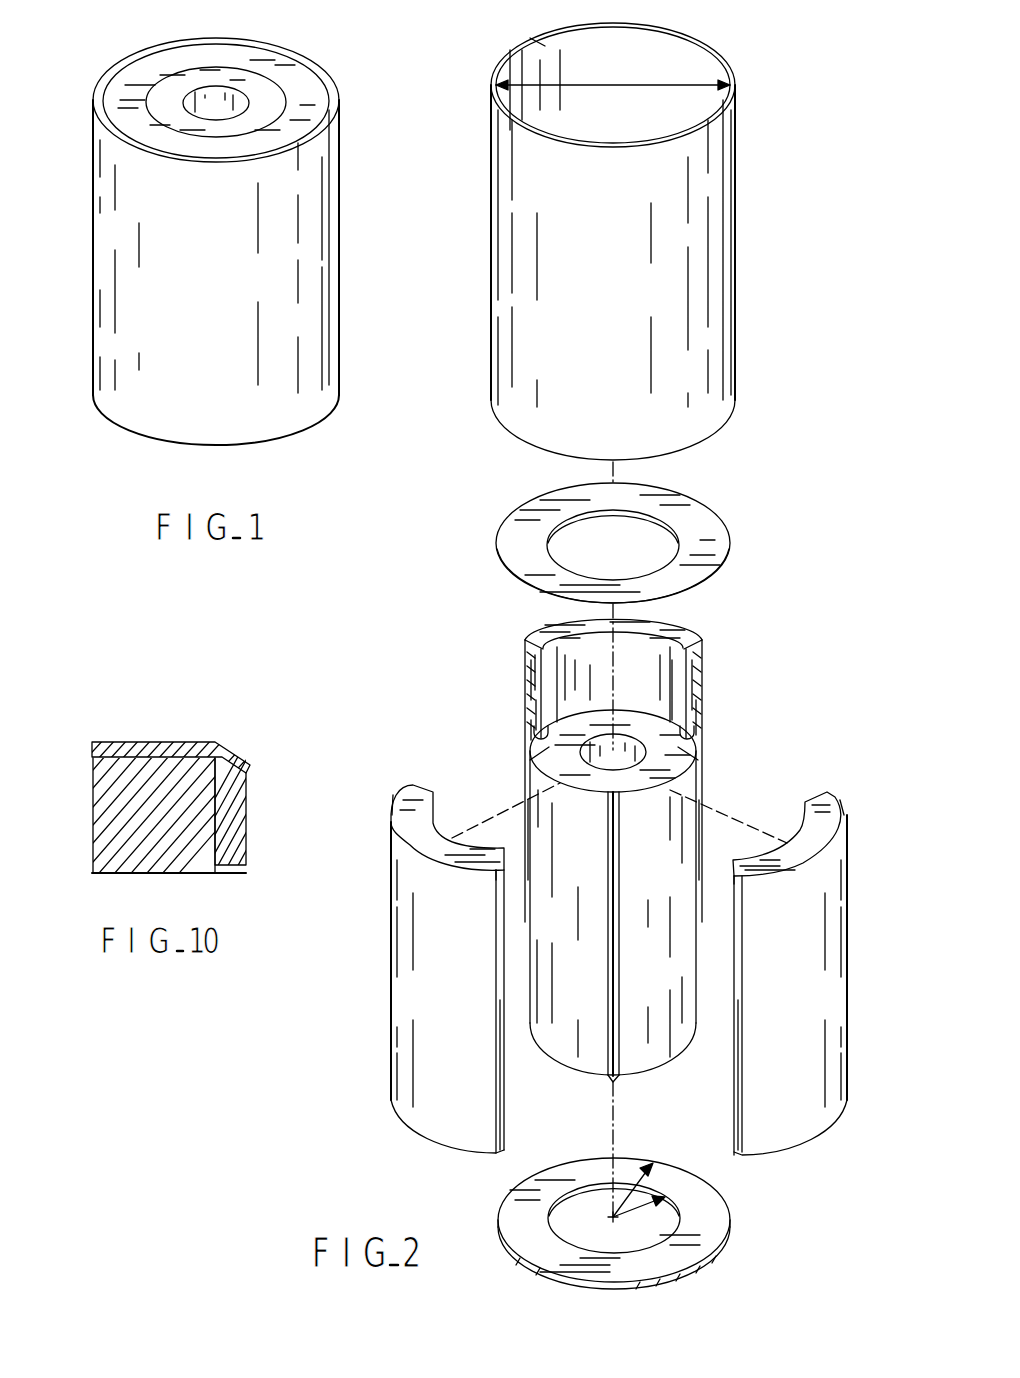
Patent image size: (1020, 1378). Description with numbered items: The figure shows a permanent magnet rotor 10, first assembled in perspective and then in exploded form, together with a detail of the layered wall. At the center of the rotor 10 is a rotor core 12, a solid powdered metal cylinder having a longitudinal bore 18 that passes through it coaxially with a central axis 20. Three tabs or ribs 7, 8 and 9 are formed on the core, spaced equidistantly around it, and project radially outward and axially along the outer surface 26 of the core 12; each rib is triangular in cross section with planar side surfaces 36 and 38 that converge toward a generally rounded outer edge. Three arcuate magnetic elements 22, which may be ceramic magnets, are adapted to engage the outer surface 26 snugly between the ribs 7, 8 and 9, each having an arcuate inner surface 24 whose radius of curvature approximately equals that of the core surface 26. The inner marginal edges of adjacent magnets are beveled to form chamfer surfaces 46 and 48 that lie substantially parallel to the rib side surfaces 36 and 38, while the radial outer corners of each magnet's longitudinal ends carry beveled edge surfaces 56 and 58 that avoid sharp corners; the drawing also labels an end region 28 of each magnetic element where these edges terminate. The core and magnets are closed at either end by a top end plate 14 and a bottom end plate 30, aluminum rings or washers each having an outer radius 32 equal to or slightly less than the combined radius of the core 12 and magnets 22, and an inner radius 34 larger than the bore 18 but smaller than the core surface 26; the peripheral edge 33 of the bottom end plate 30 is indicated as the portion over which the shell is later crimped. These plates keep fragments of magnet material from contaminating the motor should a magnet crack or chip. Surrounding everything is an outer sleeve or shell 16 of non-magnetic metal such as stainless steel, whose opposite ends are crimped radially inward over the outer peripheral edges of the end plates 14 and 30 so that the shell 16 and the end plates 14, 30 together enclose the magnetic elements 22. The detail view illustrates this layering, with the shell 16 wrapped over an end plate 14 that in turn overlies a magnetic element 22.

In FIG. 2, the tab or rib 7 is at (620, 972).
In FIG. 2, the tab or rib 8 is at (534, 739).
In FIG. 2, the tab or rib 9 is at (688, 742).
In FIG. 1, the permanent magnet rotor 10 is at (208, 223).
In FIG. 2, the permanent magnet rotor 10 is at (607, 649).
In FIG. 1, the rotor core 12 is at (255, 86).
In FIG. 2, the rotor core 12 is at (619, 882).
In FIG. 1, the top end plate 14 is at (304, 108).
In FIG. 2, the top end plate 14 is at (711, 537).
In FIG. 10, the top end plate 14 is at (231, 817).
In FIG. 1, the outer sleeve or shell 16 is at (109, 274).
In FIG. 2, the outer sleeve or shell 16 is at (718, 283).
In FIG. 10, the outer sleeve or shell 16 is at (177, 741).
In FIG. 2, the bore 18 is at (636, 750).
In FIG. 2, the central axis 20 is at (613, 1102).
In FIG. 2, the arcuate magnetic element 22 is at (607, 887).
In FIG. 10, the arcuate magnetic element 22 is at (97, 828).
In FIG. 2, the arcuate inner surface 24 is at (565, 656).
In FIG. 2, the outer surface of the core 26 is at (670, 815).
In FIG. 2, the end face of segment 28 is at (396, 852).
In FIG. 2, the bottom end plate 30 is at (651, 1202).
In FIG. 2, the outer radius 32 is at (640, 1180).
In FIG. 2, the peripheral edge 33 is at (716, 1258).
In FIG. 2, the inner radius 34 is at (668, 1202).
In FIG. 2, the planar side surface of rib 36 is at (693, 86).
In FIG. 2, the planar side surface of rib 38 is at (540, 40).
In FIG. 2, the chamfer surface 46 is at (703, 674).
In FIG. 2, the chamfer surface 48 is at (543, 694).
In FIG. 2, the chamfer or beveled edge surface 56 is at (738, 1065).
In FIG. 2, the chamfer or beveled edge surface 58 is at (504, 1066).